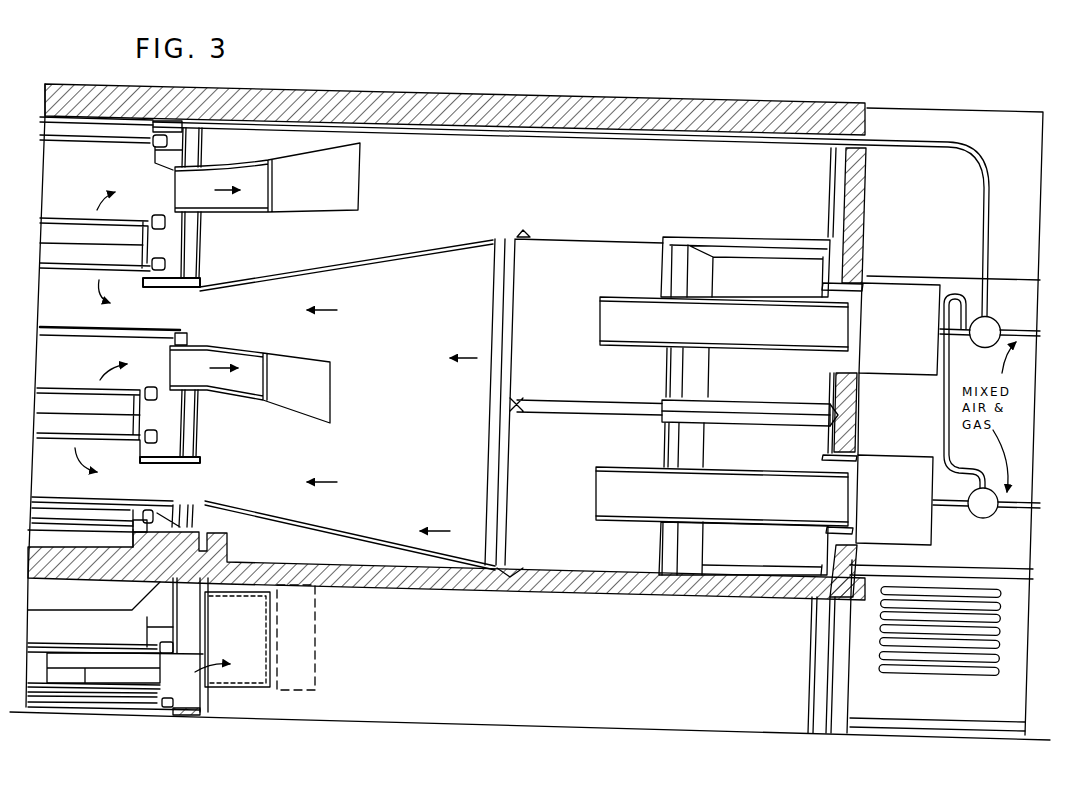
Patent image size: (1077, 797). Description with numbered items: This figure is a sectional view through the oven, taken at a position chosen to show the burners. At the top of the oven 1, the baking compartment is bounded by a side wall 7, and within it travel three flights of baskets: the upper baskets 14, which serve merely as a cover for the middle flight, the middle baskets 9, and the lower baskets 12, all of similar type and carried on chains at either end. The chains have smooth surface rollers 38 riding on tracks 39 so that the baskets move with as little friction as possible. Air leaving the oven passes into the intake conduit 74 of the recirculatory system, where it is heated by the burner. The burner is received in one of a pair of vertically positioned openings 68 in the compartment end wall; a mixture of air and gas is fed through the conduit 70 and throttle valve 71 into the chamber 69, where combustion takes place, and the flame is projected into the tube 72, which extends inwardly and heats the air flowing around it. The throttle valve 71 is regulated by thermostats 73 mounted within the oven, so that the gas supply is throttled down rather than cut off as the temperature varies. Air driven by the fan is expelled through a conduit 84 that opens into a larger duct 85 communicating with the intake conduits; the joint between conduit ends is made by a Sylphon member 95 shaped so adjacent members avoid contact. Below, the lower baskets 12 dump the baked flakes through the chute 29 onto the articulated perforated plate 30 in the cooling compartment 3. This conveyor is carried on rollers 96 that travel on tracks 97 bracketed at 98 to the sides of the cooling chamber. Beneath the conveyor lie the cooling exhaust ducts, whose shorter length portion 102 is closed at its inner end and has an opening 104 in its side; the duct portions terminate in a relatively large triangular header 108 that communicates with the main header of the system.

The top of the oven 1 is at (398, 93).
The cooling compartment 3 is at (105, 628).
The side wall 7 is at (201, 246).
The baskets 9 is at (72, 266).
The baskets 12 is at (122, 437).
The baskets 14 is at (97, 141).
The chute 29 is at (105, 612).
The articulated perforated plate 30 is at (58, 642).
The smooth surface rollers 38 is at (157, 215).
The tracks 39 is at (167, 288).
The openings 68 is at (856, 289).
The chamber 69 is at (888, 368).
The conduit 70 is at (465, 137).
The throttle valve 71 is at (1000, 318).
The tube 72 is at (645, 297).
The thermostats 73 is at (150, 126).
The intake conduit 74 is at (258, 165).
The conduit 84 is at (782, 282).
The duct 85 is at (466, 252).
The Sylphon member 95 is at (523, 236).
The rollers 96 is at (163, 653).
The tracks 97 is at (165, 710).
The brackets 98 is at (181, 713).
The shorter length portion 102 is at (135, 680).
The opening 104 is at (69, 677).
The header 108 is at (245, 683).